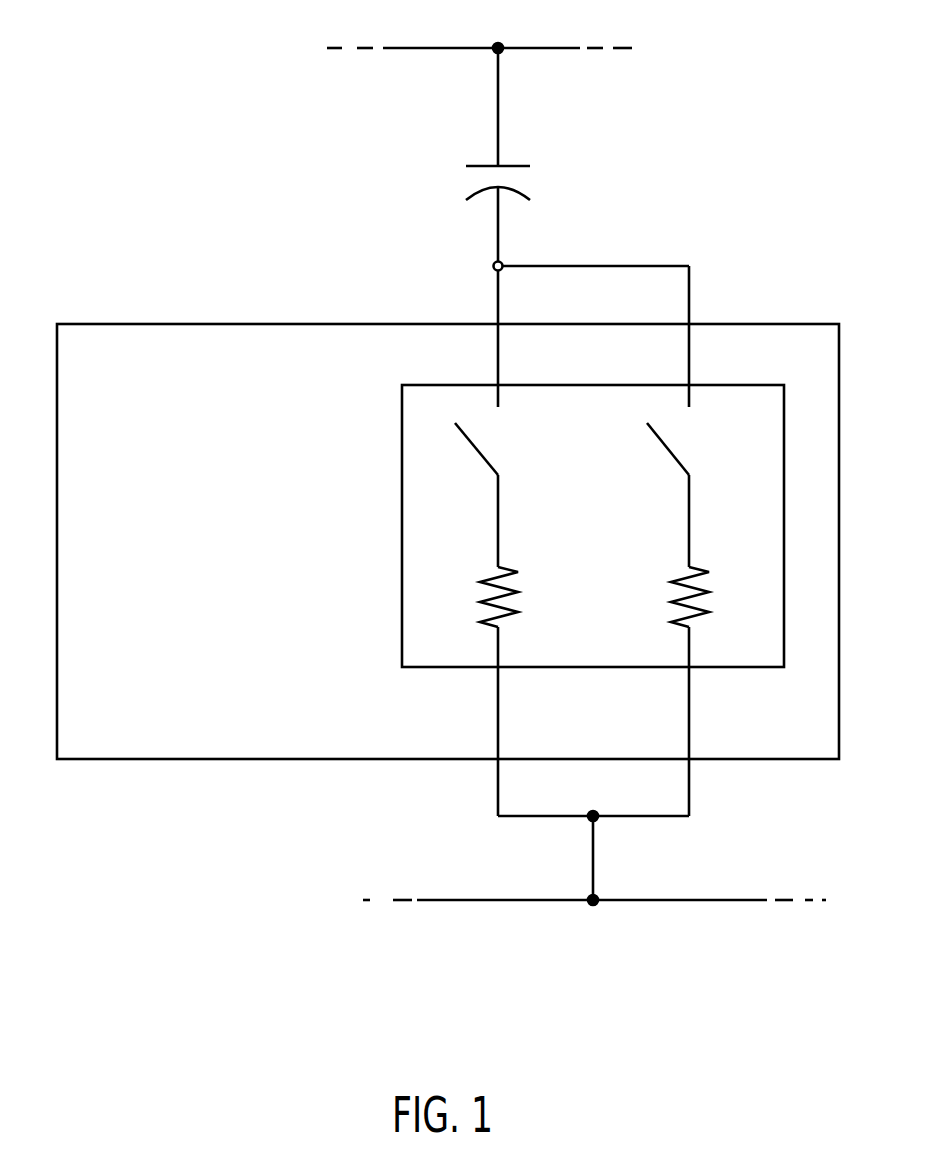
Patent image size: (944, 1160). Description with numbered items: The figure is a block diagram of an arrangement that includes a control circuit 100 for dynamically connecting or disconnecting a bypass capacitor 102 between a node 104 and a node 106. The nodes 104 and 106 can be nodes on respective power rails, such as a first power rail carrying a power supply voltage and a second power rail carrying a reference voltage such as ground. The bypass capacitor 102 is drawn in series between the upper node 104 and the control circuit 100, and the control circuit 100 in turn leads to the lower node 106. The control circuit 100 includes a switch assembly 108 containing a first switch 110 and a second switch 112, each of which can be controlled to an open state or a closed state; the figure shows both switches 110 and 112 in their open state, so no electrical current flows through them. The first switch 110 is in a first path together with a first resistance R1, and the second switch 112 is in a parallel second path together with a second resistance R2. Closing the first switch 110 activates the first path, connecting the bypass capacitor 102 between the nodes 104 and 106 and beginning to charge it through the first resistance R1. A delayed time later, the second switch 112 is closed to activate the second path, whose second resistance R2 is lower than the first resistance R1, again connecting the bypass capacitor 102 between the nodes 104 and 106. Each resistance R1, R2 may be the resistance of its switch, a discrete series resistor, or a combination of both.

The control circuit 100 is at (448, 541).
The bypass capacitor 102 is at (530, 178).
The node 104 is at (498, 46).
The node 106 is at (593, 905).
The switch assembly 108 is at (401, 595).
The first switch 110 is at (495, 458).
The second switch 112 is at (686, 458).
The first resistance R1 is at (516, 597).
The second resistance R2 is at (707, 597).